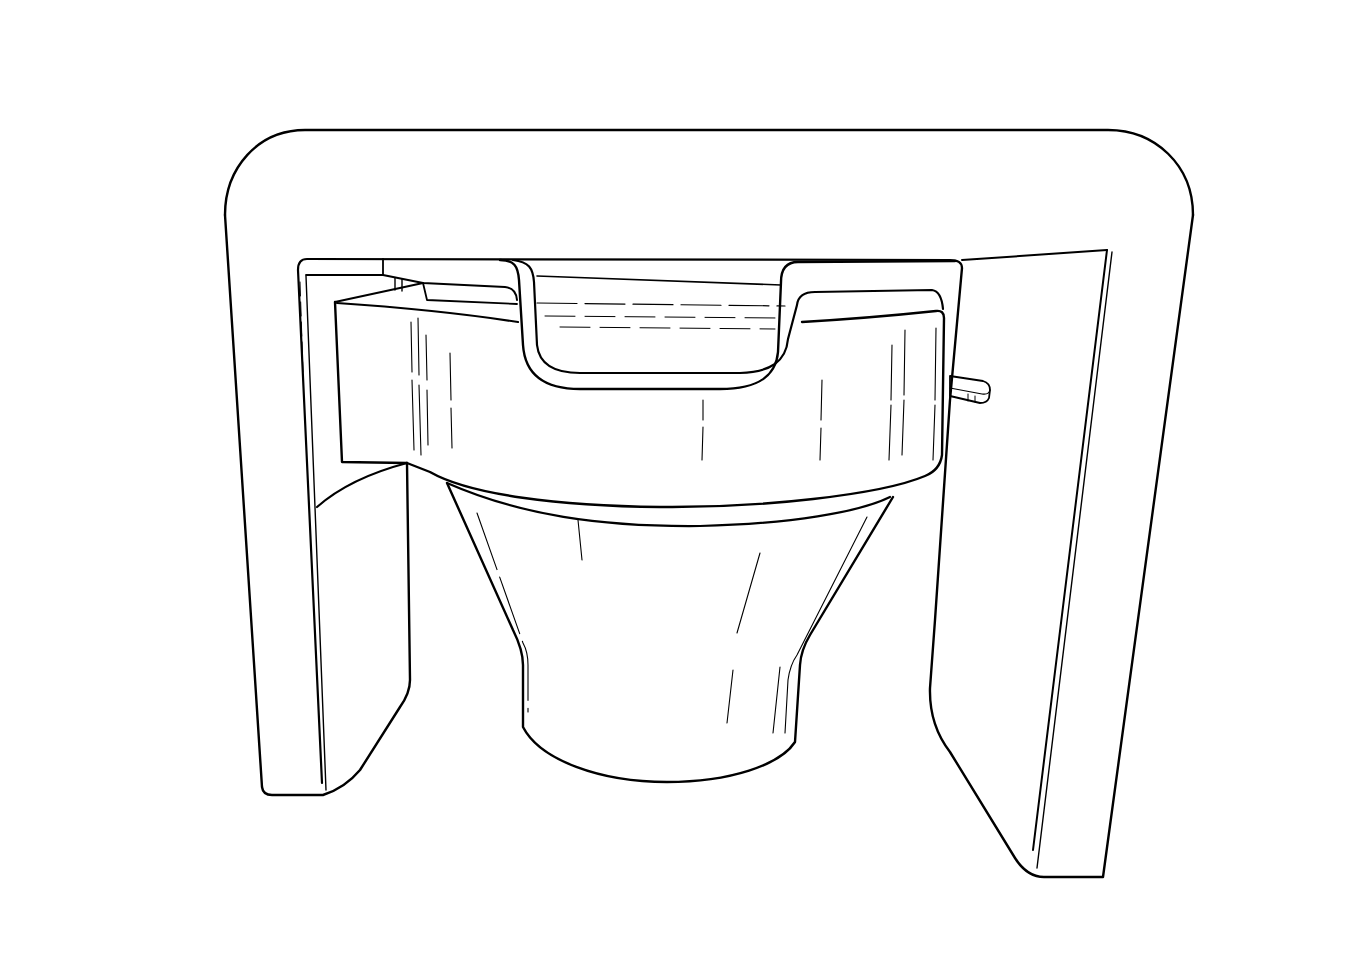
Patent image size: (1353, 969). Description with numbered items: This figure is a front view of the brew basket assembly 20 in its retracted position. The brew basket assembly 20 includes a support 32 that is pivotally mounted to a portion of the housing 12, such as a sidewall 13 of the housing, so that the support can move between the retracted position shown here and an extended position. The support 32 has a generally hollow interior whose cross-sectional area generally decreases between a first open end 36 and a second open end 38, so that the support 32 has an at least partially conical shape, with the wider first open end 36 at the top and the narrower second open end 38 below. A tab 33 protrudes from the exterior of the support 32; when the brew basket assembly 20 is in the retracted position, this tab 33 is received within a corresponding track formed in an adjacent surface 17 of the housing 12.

The housing 12 is at (920, 192).
The sidewall 13 is at (343, 570).
The adjacent surface 17 is at (1035, 500).
The brew basket assembly 20 is at (258, 198).
The support 32 is at (838, 537).
The tab 33 is at (992, 395).
The first open end 36 is at (957, 307).
The second open end 38 is at (763, 760).